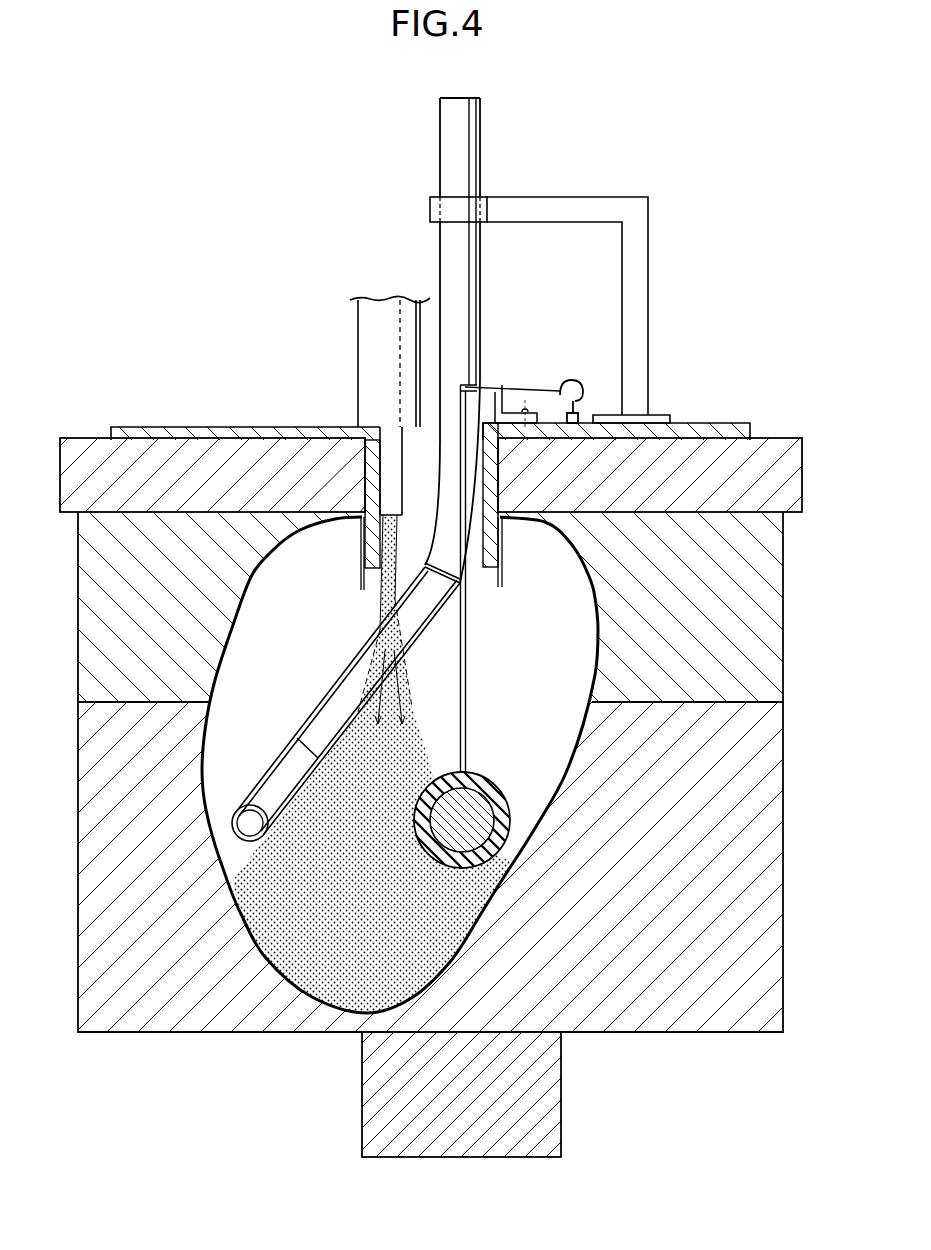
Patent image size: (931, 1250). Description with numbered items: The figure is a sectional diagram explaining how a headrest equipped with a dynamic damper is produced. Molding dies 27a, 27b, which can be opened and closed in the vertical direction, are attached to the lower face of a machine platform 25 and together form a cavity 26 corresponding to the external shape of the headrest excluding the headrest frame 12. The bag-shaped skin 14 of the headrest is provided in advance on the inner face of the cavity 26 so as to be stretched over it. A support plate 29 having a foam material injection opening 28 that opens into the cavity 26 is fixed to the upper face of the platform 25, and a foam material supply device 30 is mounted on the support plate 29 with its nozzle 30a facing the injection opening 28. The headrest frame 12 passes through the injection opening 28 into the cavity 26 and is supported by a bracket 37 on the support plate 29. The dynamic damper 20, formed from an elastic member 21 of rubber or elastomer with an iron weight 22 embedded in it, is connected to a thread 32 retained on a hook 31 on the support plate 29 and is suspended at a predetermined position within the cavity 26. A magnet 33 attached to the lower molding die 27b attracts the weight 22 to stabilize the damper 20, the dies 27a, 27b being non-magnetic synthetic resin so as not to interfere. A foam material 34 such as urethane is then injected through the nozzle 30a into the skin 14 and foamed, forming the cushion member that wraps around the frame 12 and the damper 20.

The headrest frame 12 is at (432, 253).
The skin 14 is at (270, 567).
The dynamic damper 20 is at (491, 763).
The elastic member 21 is at (505, 852).
The weight 22 is at (463, 812).
The machine platform 25 is at (90, 455).
The cavity 26 is at (227, 718).
The upper molding die 27a is at (758, 630).
The lower molding die 27b is at (765, 869).
The foam material injection opening 28 is at (386, 436).
The support plate 29 is at (703, 423).
The foam material supply device 30 is at (350, 332).
The nozzle 30a is at (390, 478).
The hook 31 is at (573, 380).
The thread 32 is at (465, 627).
The magnet 33 is at (476, 1104).
The foam material 34 is at (377, 895).
The bracket 37 is at (637, 283).